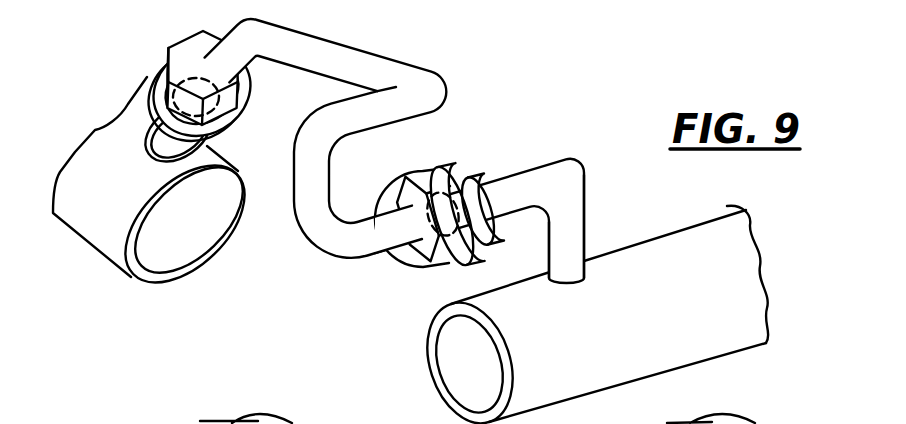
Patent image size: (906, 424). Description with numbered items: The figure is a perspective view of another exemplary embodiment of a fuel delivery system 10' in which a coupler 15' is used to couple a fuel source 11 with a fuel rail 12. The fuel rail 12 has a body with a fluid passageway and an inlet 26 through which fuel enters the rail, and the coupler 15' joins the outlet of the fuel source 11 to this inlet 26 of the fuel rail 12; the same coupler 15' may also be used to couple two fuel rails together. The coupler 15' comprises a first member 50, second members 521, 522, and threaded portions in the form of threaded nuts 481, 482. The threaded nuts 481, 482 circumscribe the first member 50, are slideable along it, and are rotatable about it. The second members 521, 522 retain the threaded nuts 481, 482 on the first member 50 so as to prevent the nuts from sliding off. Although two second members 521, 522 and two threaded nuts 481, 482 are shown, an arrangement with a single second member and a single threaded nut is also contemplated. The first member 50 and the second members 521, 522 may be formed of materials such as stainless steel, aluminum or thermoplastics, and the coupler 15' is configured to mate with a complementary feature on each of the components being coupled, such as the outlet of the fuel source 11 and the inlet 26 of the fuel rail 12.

The fuel delivery system 10' is at (560, 93).
The fuel source 11 is at (172, 145).
The fuel rail 12 is at (633, 247).
The coupler 15' is at (228, 242).
The inlet 26 is at (584, 196).
The threaded nut 481 is at (452, 173).
The threaded nut 482 is at (167, 76).
The first member 50 is at (375, 258).
The second member 521 is at (427, 205).
The second member 522 is at (222, 93).